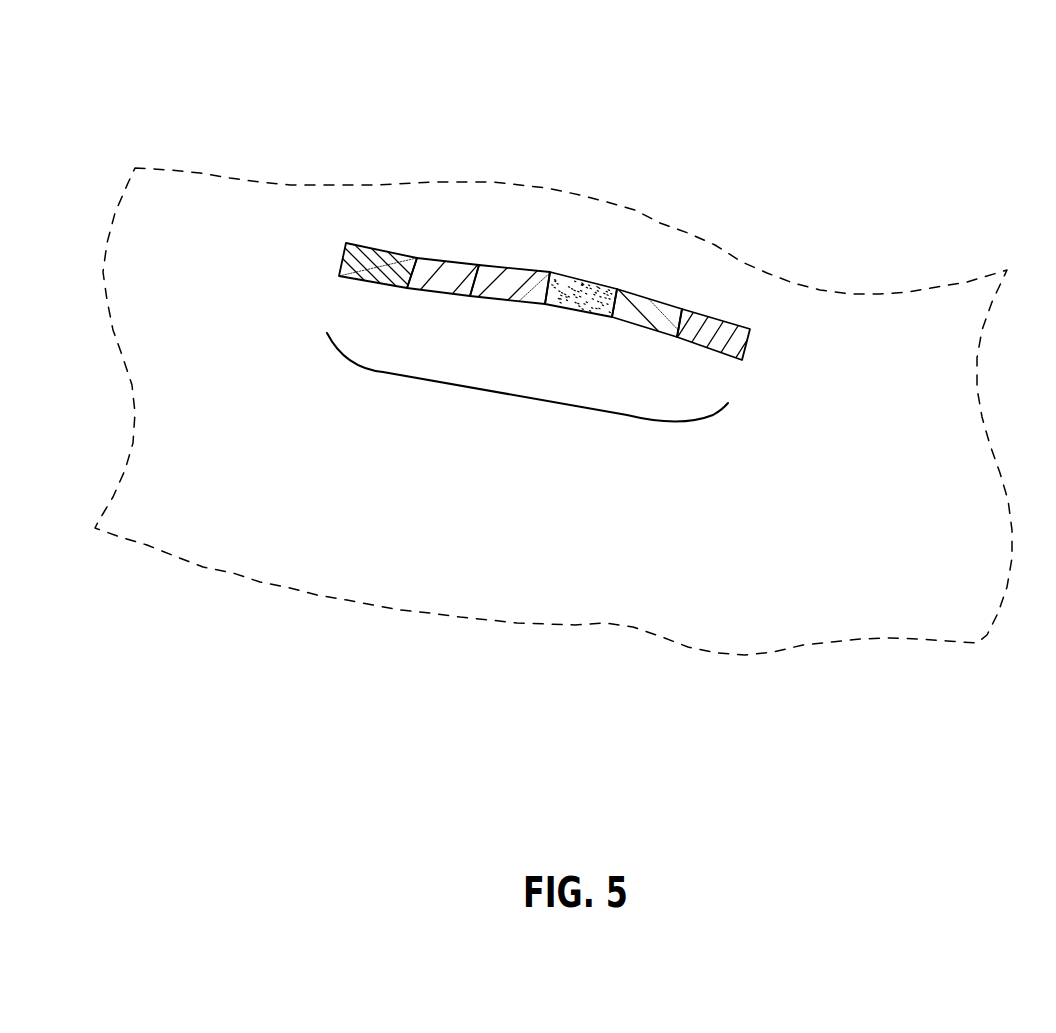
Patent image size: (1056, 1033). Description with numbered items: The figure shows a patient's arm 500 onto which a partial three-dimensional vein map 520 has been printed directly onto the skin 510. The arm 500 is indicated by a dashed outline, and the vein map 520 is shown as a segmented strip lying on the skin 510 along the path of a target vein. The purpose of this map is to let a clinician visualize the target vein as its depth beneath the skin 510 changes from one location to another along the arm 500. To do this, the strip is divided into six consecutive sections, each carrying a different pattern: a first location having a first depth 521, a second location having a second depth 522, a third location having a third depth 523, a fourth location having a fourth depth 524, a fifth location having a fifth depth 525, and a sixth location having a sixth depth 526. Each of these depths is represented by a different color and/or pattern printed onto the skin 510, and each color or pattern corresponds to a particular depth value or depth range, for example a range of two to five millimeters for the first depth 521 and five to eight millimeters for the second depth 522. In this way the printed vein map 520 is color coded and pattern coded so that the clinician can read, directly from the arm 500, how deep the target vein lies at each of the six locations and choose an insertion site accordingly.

The arm 500 is at (770, 51).
The skin 510 is at (252, 245).
The partial three-dimensional vein map 520 is at (523, 397).
The first depth 521 is at (385, 248).
The second depth 522 is at (443, 257).
The third depth 523 is at (510, 265).
The fourth depth 524 is at (580, 280).
The fifth depth 525 is at (645, 297).
The sixth depth 526 is at (722, 317).